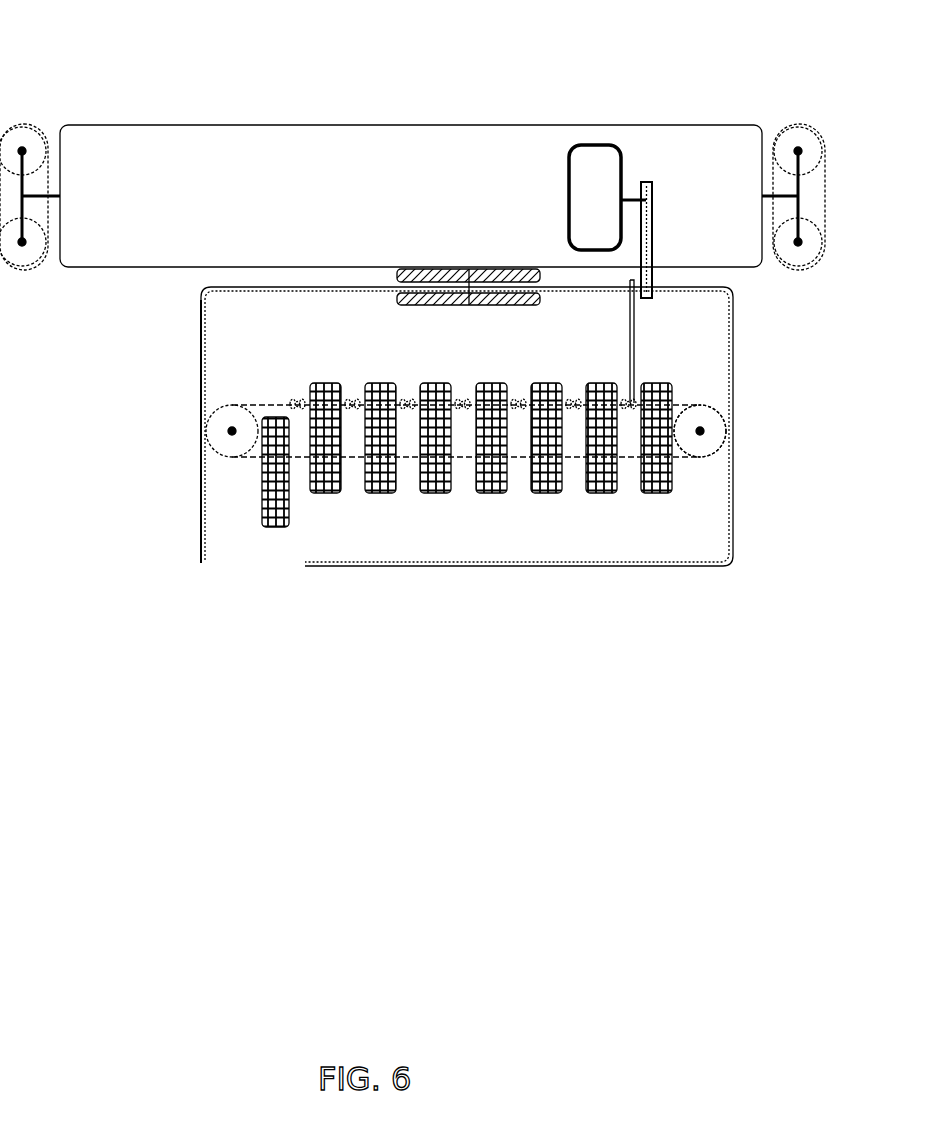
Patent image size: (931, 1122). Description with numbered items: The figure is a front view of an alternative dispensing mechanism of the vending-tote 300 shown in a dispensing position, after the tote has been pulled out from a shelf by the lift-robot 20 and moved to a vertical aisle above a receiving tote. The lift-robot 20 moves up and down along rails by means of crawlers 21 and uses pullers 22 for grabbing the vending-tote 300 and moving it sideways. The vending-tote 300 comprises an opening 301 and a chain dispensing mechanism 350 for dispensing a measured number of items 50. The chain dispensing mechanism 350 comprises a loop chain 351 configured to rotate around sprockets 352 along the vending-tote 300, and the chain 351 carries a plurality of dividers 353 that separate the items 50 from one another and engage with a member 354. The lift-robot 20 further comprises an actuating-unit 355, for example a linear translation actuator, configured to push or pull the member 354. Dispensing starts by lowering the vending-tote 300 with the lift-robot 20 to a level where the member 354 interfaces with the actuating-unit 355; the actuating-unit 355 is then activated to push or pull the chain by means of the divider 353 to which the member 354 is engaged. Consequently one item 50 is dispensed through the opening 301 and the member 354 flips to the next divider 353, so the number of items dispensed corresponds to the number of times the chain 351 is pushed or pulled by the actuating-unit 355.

The lift-robot 20 is at (303, 125).
The crawlers 21 is at (30, 138).
The pullers 22 is at (452, 270).
The items 50 is at (283, 527).
The vending-tote 300 is at (201, 487).
The opening 301 is at (222, 565).
The chain dispensing mechanism 350 is at (288, 362).
The loop chain 351 is at (688, 455).
The sprockets 352 is at (232, 431).
The dividers 353 is at (405, 400).
The member 354 is at (634, 342).
The actuating-unit 355 is at (592, 182).